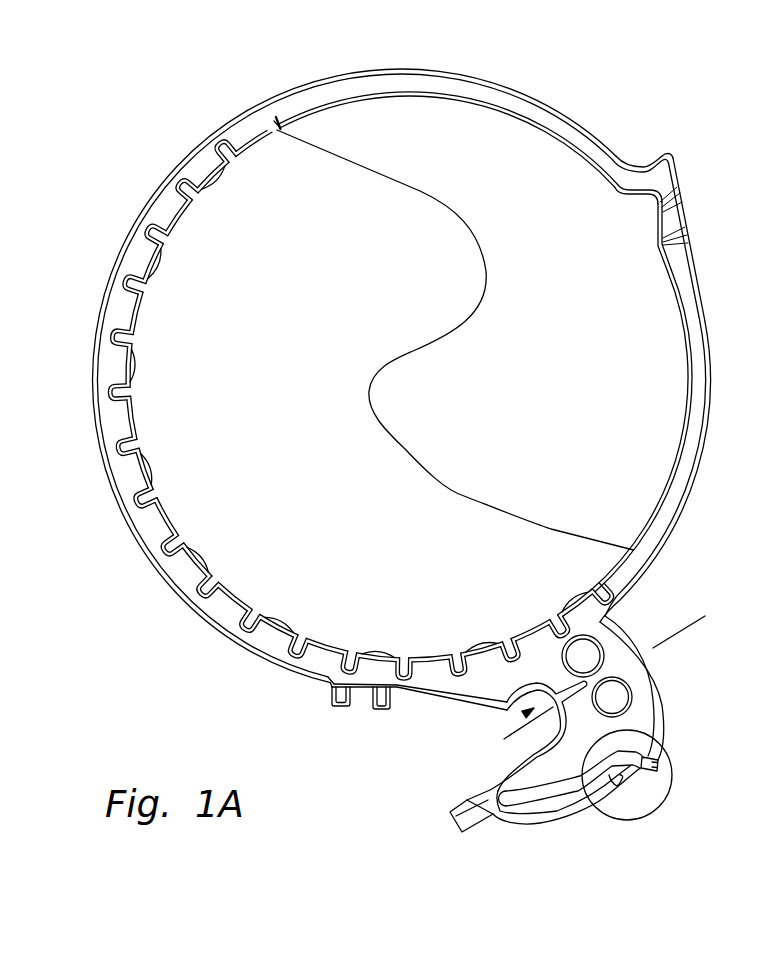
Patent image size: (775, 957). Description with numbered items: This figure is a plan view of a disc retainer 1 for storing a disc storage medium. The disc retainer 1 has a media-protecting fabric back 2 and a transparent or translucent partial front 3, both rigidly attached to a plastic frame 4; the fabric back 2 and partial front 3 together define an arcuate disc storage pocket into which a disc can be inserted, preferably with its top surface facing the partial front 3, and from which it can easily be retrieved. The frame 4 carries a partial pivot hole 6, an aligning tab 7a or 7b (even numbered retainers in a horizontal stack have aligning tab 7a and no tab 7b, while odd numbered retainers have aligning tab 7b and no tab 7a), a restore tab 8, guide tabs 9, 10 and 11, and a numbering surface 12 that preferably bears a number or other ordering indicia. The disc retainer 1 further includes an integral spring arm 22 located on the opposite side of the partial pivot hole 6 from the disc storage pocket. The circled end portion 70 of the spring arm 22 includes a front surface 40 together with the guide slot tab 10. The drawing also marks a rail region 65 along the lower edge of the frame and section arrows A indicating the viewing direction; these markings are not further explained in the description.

The disc retainer 1 is at (243, 700).
The media-protecting fabric back 2 is at (649, 370).
The partial front 3 is at (274, 172).
The plastic frame 4 is at (574, 144).
The partial pivot hole 6 is at (502, 713).
The aligning tab 7a is at (380, 709).
The aligning tab 7b is at (333, 706).
The restore tab 8 is at (640, 163).
The guide tab 9 is at (650, 672).
The guide slot tab 10 is at (660, 764).
The guide tab 11 is at (458, 831).
The numbering surface 12 is at (675, 169).
The spring arm 22 is at (568, 815).
The front surface 40 is at (621, 791).
The rail 65 is at (437, 699).
The end portion of spring arm 70 is at (678, 808).
The section line A is at (602, 680).